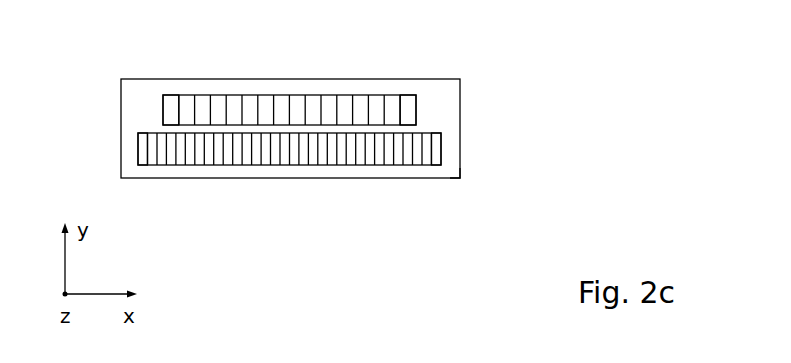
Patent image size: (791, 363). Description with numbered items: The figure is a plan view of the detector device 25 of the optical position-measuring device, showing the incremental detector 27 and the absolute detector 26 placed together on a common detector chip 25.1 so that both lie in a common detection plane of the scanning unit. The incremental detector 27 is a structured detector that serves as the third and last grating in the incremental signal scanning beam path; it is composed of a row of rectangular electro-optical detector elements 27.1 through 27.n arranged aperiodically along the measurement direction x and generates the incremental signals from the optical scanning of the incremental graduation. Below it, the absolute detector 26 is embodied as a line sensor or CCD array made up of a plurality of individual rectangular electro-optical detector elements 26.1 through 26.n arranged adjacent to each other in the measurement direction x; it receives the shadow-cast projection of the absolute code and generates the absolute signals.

The detector device 25 is at (120, 132).
The detector chip 25.1 is at (458, 177).
The absolute detector 26 is at (260, 165).
The first detector element of the absolute detector 26.1 is at (145, 158).
The n-th detector element of the absolute detector 26.n is at (436, 160).
The incremental detector 27 is at (317, 95).
The first detector element of the incremental detector 27.1 is at (173, 100).
The n-th detector element of the incremental detector 27.n is at (407, 102).